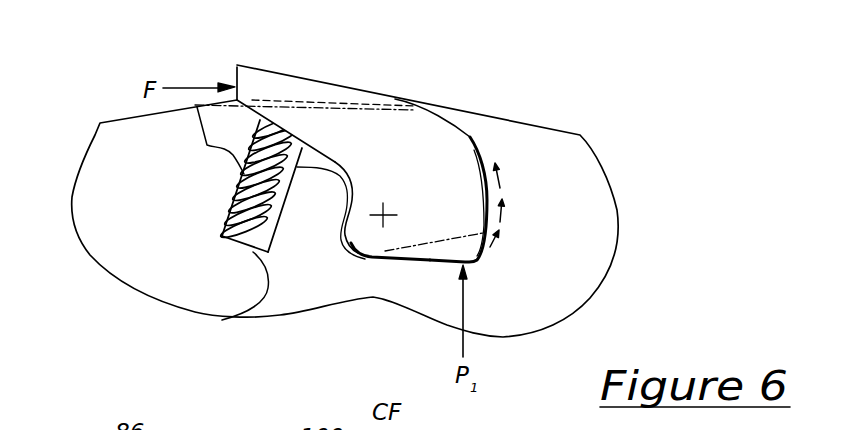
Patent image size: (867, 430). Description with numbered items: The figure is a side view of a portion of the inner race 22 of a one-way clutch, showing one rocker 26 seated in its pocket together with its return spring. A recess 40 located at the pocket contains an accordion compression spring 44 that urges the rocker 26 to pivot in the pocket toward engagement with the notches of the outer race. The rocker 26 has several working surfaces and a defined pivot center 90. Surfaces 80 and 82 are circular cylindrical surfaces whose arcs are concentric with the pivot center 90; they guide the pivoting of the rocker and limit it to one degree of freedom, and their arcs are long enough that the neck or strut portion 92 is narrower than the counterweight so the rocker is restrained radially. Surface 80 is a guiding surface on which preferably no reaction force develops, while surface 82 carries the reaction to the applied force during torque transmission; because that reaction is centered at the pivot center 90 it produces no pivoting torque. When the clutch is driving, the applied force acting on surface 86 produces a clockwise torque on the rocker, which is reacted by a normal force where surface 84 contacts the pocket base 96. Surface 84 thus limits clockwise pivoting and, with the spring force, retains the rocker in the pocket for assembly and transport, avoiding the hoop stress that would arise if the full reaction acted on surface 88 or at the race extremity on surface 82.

The inner race 22 is at (593, 240).
The rocker 26 is at (433, 200).
The recess 40 is at (240, 315).
The accordion compression spring 44 is at (233, 194).
The guiding surface 80 is at (418, 262).
The reaction surface 82 is at (492, 116).
The pivot-limiting surface 84 is at (443, 266).
The force-receiving surface 86 is at (236, 72).
The rocker surface 88 is at (317, 81).
The pivot center 90 is at (383, 210).
The strut portion 92 is at (257, 82).
The pocket base 96 is at (343, 235).